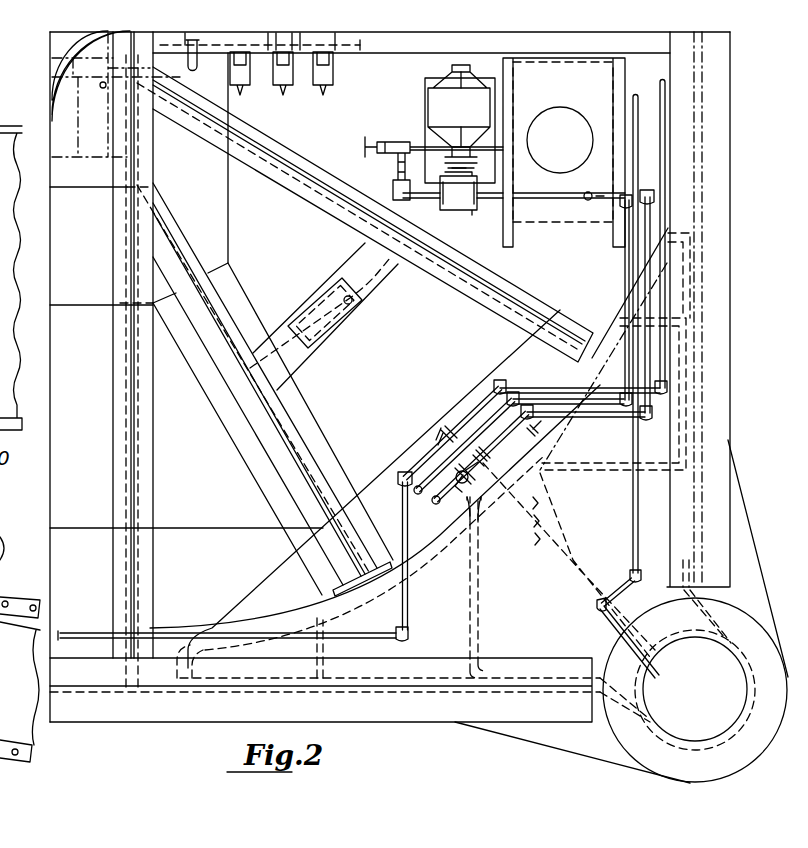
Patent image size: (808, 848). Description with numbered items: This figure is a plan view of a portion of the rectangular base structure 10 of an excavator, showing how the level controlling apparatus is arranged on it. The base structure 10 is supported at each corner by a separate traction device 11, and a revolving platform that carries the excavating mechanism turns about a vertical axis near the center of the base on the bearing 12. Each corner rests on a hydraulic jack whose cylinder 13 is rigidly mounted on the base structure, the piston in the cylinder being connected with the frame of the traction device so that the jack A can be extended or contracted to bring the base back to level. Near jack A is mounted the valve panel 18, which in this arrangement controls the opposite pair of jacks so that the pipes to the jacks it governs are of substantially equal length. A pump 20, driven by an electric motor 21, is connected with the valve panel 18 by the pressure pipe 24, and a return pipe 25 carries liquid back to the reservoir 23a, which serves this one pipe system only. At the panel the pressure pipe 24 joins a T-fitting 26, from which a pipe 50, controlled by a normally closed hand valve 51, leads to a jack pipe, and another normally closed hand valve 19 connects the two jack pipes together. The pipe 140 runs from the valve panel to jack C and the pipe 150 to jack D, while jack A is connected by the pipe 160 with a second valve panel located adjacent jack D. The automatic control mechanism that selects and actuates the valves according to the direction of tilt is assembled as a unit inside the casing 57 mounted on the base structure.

The base structure 10 is at (715, 362).
The traction device 11 is at (11, 527).
The bearing 12 is at (62, 97).
The cylinder 13 is at (675, 723).
The jack A is at (747, 753).
The valve panel 18 is at (473, 507).
The hand valve 19 is at (448, 430).
The pump 20 is at (463, 207).
The electric motor 21 is at (440, 105).
The reservoir 23a is at (560, 210).
The pressure pipe 24 is at (593, 417).
The return pipe 25 is at (575, 393).
The T-fitting 26 is at (486, 463).
The pipe 50 is at (465, 520).
The hand valve 51 is at (472, 485).
The casing 57 is at (337, 313).
The pipe 140 is at (347, 635).
The pipe 150 is at (563, 388).
The pipe 160 is at (631, 527).